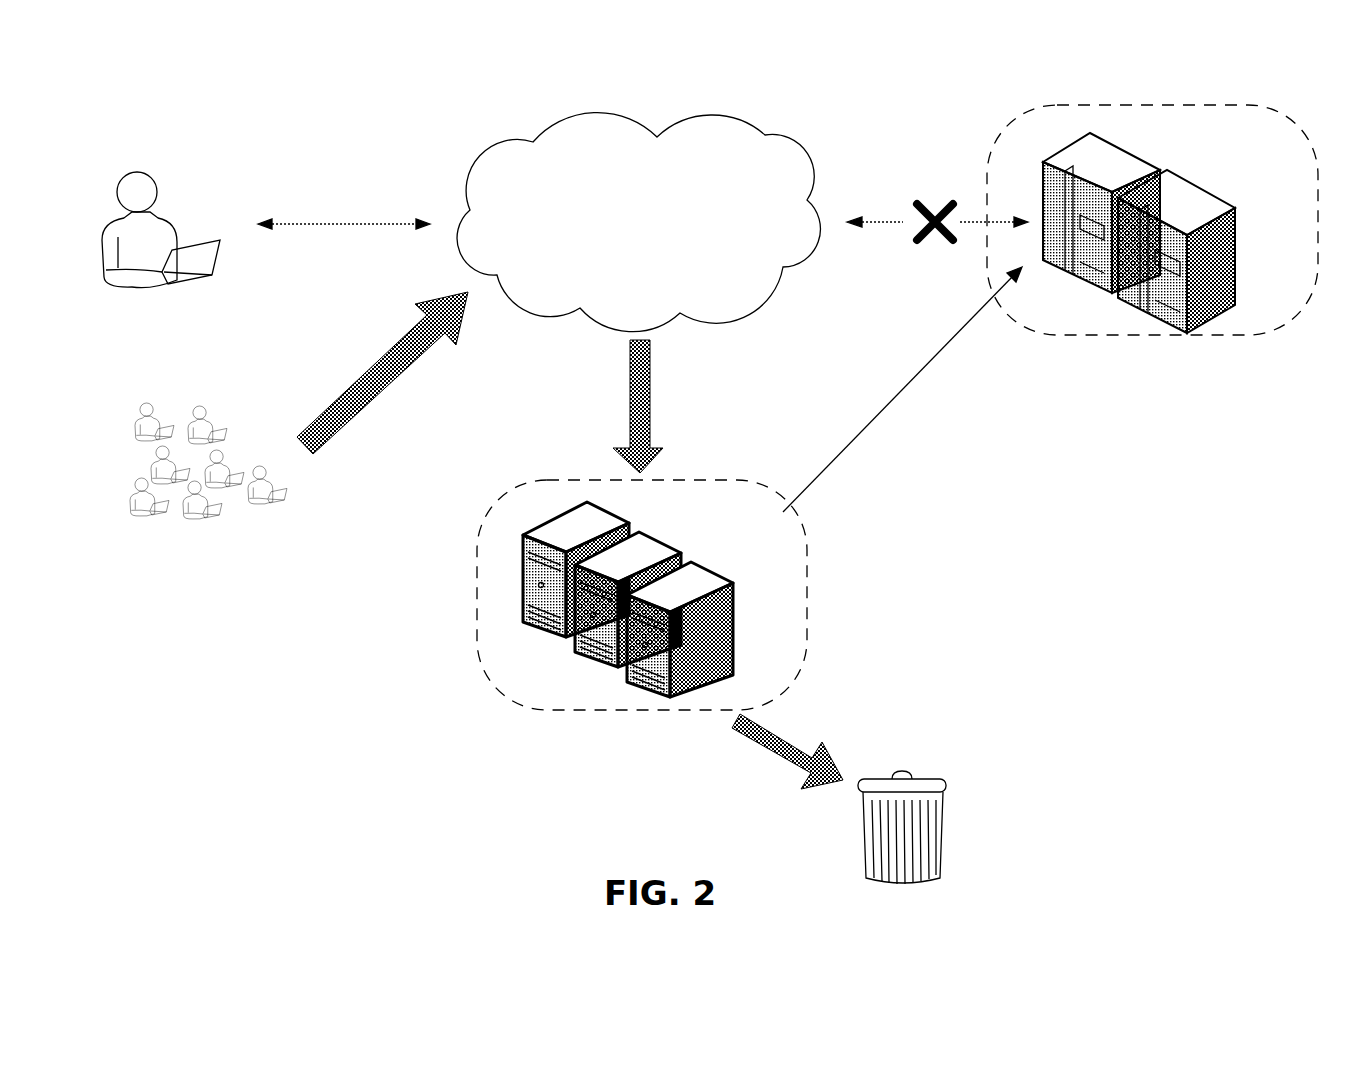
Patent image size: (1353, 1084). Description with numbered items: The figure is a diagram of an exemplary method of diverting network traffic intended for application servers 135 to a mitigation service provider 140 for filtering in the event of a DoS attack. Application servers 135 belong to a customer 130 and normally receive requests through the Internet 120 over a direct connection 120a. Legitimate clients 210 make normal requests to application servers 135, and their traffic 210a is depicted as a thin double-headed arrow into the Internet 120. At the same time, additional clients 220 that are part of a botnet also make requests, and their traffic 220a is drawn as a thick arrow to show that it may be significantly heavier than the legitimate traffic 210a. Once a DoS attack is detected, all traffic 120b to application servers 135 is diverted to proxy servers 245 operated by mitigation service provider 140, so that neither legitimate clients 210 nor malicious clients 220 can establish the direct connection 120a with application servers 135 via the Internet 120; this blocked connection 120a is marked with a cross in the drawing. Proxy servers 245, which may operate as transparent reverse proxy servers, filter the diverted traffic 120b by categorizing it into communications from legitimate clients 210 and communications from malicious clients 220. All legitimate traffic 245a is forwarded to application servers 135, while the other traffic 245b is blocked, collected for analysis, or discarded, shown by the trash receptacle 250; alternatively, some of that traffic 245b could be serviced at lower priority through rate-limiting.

The Internet 120 is at (765, 135).
The direct connection 120a is at (922, 198).
The diverted traffic 120b is at (660, 402).
The customer 130 is at (1150, 105).
The application servers 135 is at (1163, 160).
The mitigation service provider 140 is at (475, 560).
The legitimate clients 210 is at (172, 185).
The legitimate client traffic 210a is at (330, 215).
The malicious clients 220 is at (232, 400).
The malicious client traffic 220a is at (410, 370).
The proxy servers 245 is at (630, 522).
The legitimate traffic 245a is at (882, 418).
The other traffic 245b is at (788, 726).
The discarded traffic 250 is at (945, 826).